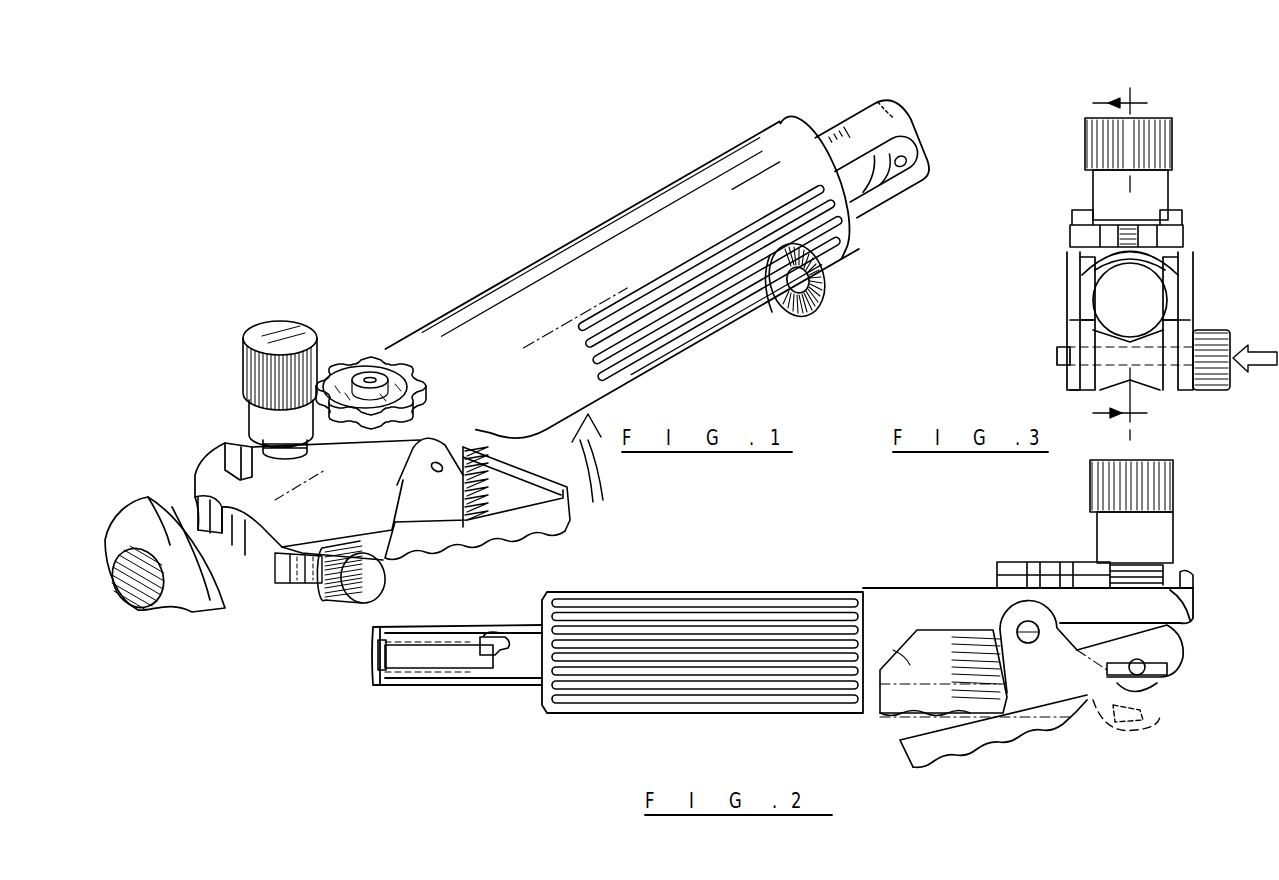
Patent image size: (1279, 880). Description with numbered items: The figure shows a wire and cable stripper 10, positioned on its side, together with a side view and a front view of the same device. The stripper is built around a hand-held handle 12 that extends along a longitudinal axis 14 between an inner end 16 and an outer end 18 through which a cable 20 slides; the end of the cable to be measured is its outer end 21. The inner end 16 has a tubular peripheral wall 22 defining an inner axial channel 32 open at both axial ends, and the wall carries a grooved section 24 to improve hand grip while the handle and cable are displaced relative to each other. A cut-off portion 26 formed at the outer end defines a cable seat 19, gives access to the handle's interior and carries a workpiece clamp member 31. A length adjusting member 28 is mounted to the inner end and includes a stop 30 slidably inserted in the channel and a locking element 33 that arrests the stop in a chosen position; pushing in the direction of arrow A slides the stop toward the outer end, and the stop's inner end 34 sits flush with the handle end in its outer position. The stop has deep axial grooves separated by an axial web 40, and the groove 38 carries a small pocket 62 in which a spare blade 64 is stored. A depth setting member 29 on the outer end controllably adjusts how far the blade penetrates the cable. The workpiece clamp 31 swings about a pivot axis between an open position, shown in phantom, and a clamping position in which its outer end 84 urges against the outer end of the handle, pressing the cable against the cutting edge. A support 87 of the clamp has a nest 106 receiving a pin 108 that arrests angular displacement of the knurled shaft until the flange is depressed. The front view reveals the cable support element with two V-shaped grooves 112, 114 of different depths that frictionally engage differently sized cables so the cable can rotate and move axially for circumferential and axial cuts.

In FIG. 1, the wire and cable stripper 10 is at (812, 104).
In FIG. 1, the arrow A is at (935, 94).
In FIG. 1, the hand-held handle 12 is at (533, 272).
In FIG. 2, the hand-held handle 12 is at (867, 650).
In FIG. 1, the longitudinal axis 14 is at (650, 272).
In FIG. 2, the longitudinal axis 14 is at (705, 651).
In FIG. 1, the inner end 16 is at (814, 142).
In FIG. 1, the outer end 18 is at (215, 455).
In FIG. 1, the cable seat 19 is at (238, 556).
In FIG. 2, the cable seat 19 is at (975, 673).
In FIG. 1, the cable 20 is at (145, 495).
In FIG. 1, the outer end of cable 21 is at (215, 608).
In FIG. 1, the tubular peripheral wall 22 is at (736, 152).
In FIG. 1, the grooved section 24 is at (832, 242).
In FIG. 1, the cut-off portion 26 is at (492, 416).
In FIG. 1, the length adjusting member 28 is at (962, 183).
In FIG. 2, the length adjusting member 28 is at (457, 655).
In FIG. 1, the depth setting member 29 is at (302, 312).
In FIG. 2, the depth setting member 29 is at (1131, 511).
In FIG. 3, the depth setting member 29 is at (1128, 169).
In FIG. 1, the stop 30 is at (930, 156).
In FIG. 1, the workpiece clamp member 31 is at (610, 520).
In FIG. 2, the workpiece clamp member 31 is at (993, 731).
In FIG. 3, the inner axial channel 32 is at (1150, 302).
In FIG. 1, the locking element 33 is at (822, 293).
In FIG. 1, the inner end of stop 34 is at (912, 116).
In FIG. 2, the axial groove 38 is at (462, 672).
In FIG. 1, the axial web 40 is at (880, 200).
In FIG. 1, the pocket 62 is at (330, 356).
In FIG. 2, the pocket 62 is at (396, 675).
In FIG. 3, the pocket 62 is at (1126, 228).
In FIG. 2, the spare blade 64 is at (433, 662).
In FIG. 2, the outer end of clamp 84 is at (1162, 640).
In FIG. 2, the support 87 is at (1175, 662).
In FIG. 2, the nest 106 is at (1113, 677).
In FIG. 2, the pin 108 is at (1162, 680).
In FIG. 3, the groove 112 is at (1145, 385).
In FIG. 3, the groove 114 is at (1110, 300).